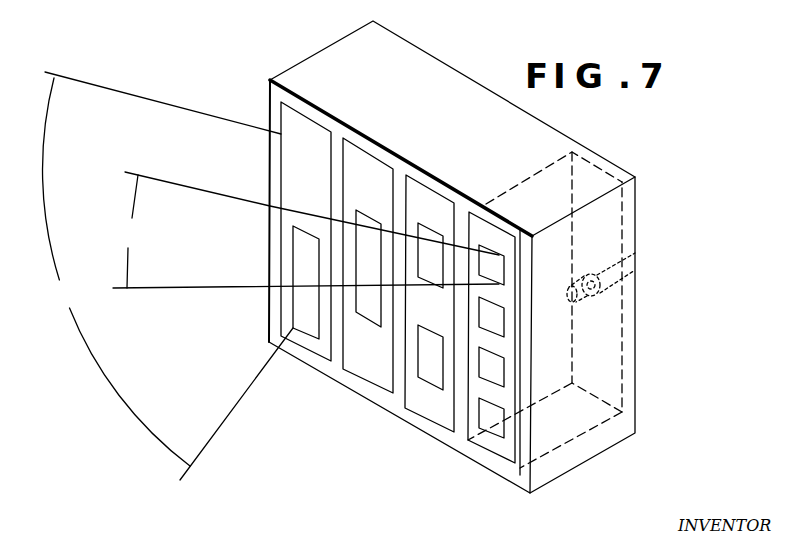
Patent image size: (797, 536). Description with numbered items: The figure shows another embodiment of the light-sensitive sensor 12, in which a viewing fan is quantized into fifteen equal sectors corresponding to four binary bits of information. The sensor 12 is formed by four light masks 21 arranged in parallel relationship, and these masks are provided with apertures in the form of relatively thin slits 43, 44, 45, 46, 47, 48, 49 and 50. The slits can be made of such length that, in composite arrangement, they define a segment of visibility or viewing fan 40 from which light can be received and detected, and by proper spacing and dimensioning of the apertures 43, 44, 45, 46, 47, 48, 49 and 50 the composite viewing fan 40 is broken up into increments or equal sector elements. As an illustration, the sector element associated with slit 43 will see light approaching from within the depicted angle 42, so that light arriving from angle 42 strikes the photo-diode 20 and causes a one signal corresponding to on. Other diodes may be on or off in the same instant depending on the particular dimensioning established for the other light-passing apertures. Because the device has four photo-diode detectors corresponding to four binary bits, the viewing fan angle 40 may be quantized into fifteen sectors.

The sensor 12 is at (315, 57).
The photo-diode 20 is at (585, 300).
The light masks 21 is at (325, 352).
The viewing fan 40 is at (168, 276).
The angle 42 is at (306, 230).
The slit 43 is at (499, 278).
The slit 44 is at (499, 328).
The slit 45 is at (499, 378).
The slit 46 is at (499, 430).
The slit 47 is at (438, 268).
The slit 48 is at (438, 371).
The slit 49 is at (376, 281).
The slit 50 is at (314, 281).